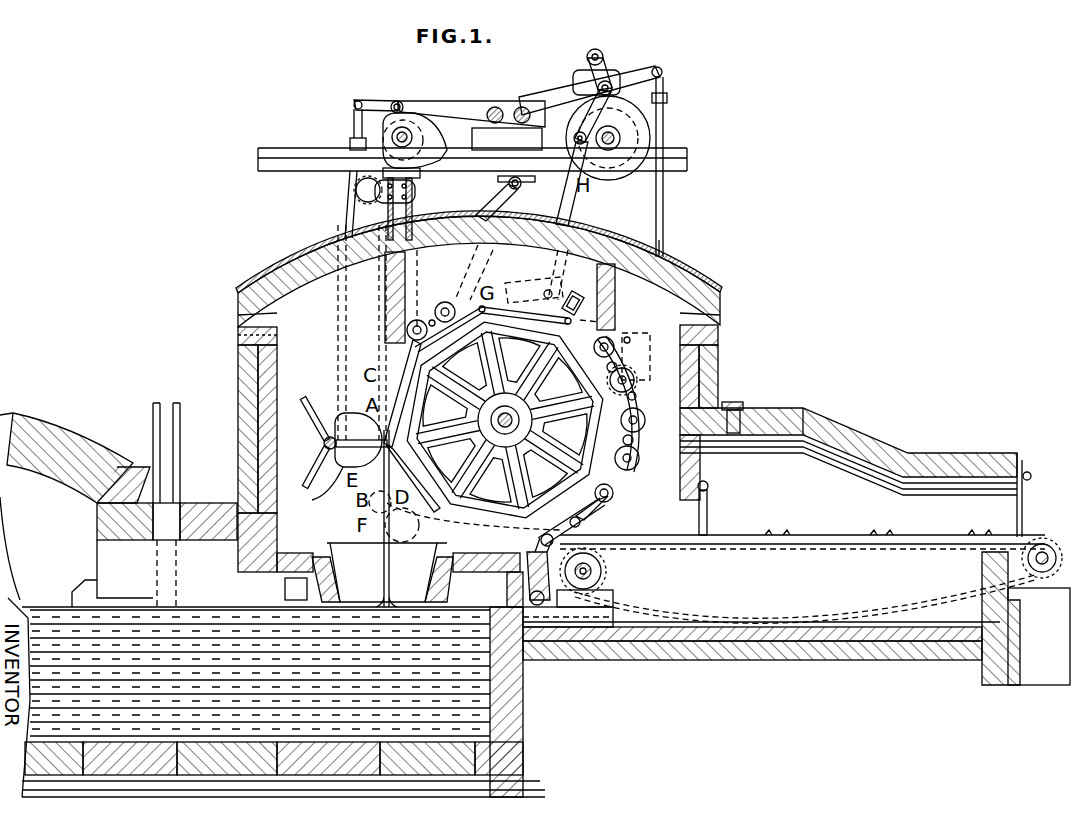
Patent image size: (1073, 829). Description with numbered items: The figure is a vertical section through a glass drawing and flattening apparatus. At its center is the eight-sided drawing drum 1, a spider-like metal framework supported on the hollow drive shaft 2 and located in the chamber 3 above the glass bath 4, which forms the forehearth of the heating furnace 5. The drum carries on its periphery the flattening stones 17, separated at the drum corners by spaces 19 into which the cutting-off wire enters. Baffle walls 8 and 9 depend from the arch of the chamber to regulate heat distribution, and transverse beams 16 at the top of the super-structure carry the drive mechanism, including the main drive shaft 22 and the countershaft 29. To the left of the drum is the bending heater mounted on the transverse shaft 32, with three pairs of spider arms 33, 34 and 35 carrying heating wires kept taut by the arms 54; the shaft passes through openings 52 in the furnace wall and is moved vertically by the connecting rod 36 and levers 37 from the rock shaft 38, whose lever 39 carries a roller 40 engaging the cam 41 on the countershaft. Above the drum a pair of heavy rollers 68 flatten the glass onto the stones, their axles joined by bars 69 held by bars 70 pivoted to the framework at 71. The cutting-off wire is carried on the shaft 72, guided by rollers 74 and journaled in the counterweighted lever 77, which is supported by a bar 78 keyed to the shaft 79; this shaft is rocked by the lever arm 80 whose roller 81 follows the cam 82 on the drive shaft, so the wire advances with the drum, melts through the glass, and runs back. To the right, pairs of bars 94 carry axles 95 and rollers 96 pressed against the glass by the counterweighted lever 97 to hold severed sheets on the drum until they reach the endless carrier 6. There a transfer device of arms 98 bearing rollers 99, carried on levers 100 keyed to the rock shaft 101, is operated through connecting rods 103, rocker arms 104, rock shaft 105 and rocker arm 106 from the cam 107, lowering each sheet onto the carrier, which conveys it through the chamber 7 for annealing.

The drawing drum 1 is at (505, 420).
The hollow drive shaft 2 is at (505, 420).
The chamber 3 is at (298, 290).
The glass bath 4 is at (246, 650).
The heating furnace 5 is at (53, 490).
The endless carrier 6 is at (809, 576).
The chamber 7 is at (833, 480).
The baffle wall 8 is at (385, 287).
The baffle wall 9 is at (615, 299).
The transverse beams 16 is at (302, 156).
The flattening stones 17 is at (406, 367).
The spaces 19 is at (423, 517).
The shaft 22 is at (622, 137).
The countershaft 29 is at (396, 134).
The transverse shaft 32 is at (323, 443).
The spider arm 33 is at (320, 430).
The spider arm 34 is at (317, 460).
The spider arm 35 is at (356, 455).
The connecting rod 36 is at (343, 203).
The lever 37 is at (373, 101).
The rock shaft 38 is at (495, 107).
The lever 39 is at (456, 107).
The roller 40 is at (401, 102).
The cam 41 is at (428, 148).
The openings 52 is at (341, 491).
The arms 54 is at (336, 412).
The rollers 68 is at (446, 302).
The bars 69 is at (440, 308).
The bars 70 is at (505, 207).
The pivot 71 is at (522, 184).
The shaft 72 is at (577, 294).
The guide rollers 74 is at (607, 320).
The counterweighted lever 77 is at (517, 292).
The bar 78 is at (570, 207).
The shaft 79 is at (606, 55).
The lever arm 80 is at (590, 70).
The roller 81 is at (575, 137).
The cam 82 is at (665, 190).
The bars 94 is at (638, 380).
The axles 95 is at (610, 342).
The rollers 96 is at (618, 367).
The counterweighted lever 97 is at (640, 341).
The arms 98 is at (587, 515).
The rollers 99 is at (614, 495).
The levers 100 is at (540, 576).
The rock shaft 101 is at (540, 630).
The connecting rods 103 is at (664, 240).
The rocker arms 104 is at (661, 70).
The rock shaft 105 is at (522, 107).
The rocker arm 106 is at (552, 98).
The cam 107 is at (667, 85).